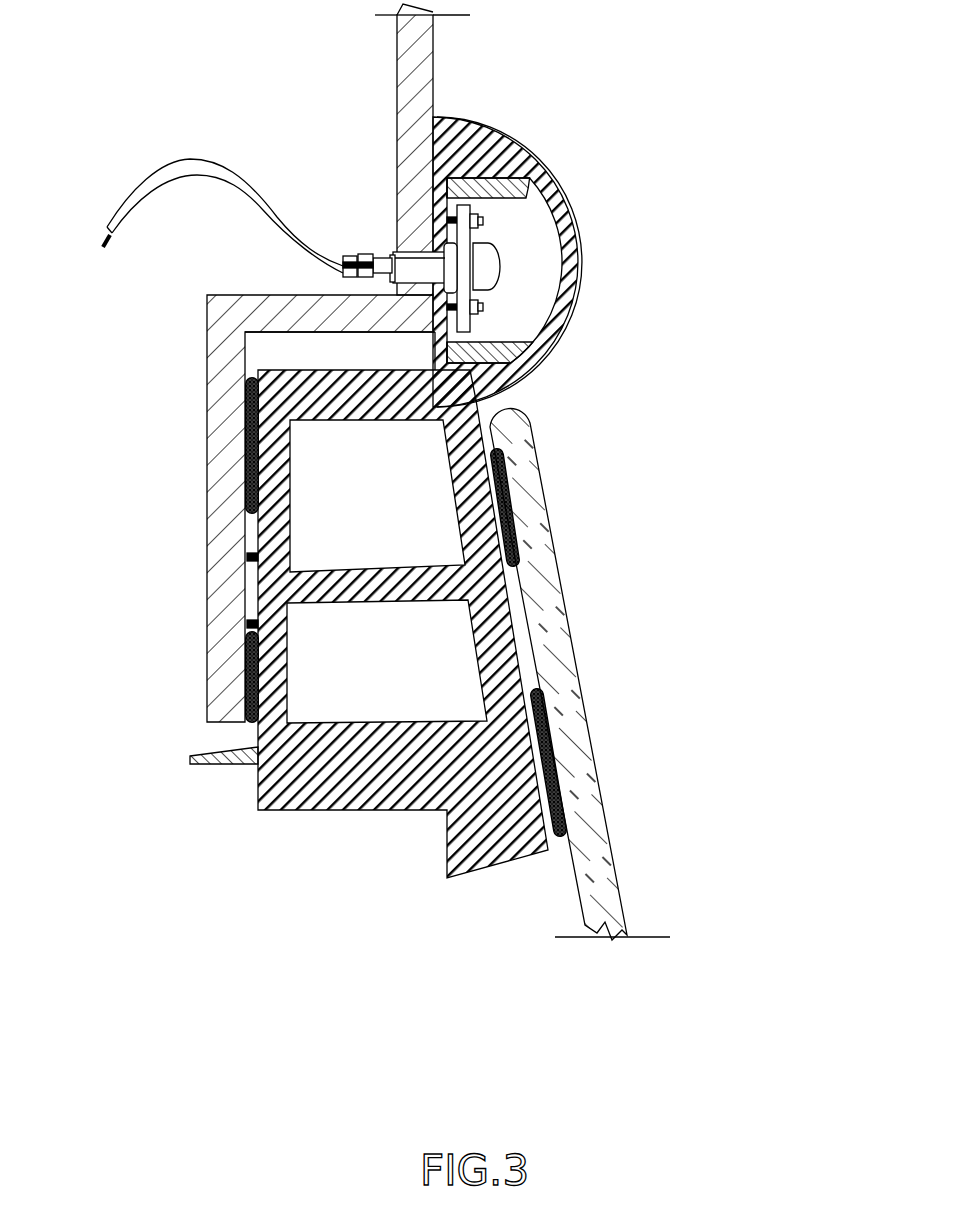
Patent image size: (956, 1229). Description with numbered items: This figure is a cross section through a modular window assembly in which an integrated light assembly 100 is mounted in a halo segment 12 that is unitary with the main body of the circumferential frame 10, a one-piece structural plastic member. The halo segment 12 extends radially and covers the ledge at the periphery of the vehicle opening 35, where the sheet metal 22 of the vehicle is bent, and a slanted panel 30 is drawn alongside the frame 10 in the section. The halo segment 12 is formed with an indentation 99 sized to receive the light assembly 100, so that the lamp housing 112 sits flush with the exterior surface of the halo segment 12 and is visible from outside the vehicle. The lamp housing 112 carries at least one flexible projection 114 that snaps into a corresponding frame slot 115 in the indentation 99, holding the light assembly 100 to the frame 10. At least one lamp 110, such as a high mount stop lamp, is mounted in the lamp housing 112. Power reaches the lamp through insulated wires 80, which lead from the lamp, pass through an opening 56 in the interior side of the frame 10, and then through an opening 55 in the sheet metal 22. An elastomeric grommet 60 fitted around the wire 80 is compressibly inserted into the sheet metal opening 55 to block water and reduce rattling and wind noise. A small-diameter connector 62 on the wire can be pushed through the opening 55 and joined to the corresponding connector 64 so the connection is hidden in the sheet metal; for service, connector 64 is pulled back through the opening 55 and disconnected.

The circumferential frame 10 is at (296, 824).
The halo segment 12 is at (528, 153).
The sheet metal 22 is at (397, 66).
The glass panel 30 is at (563, 593).
The vehicle opening 35 is at (230, 742).
The sheet metal opening 55 is at (408, 257).
The frame opening 56 is at (431, 250).
The elastomeric grommet 60 is at (408, 250).
The connector 62 is at (372, 258).
The corresponding connector 64 is at (343, 270).
The insulated wires 80 is at (138, 177).
The indentation 99 is at (527, 218).
The light assembly 100 is at (614, 311).
The lamp 110 is at (494, 289).
The lamp housing 112 is at (573, 225).
The flexible projection 114 is at (540, 175).
The frame slot 115 is at (468, 158).